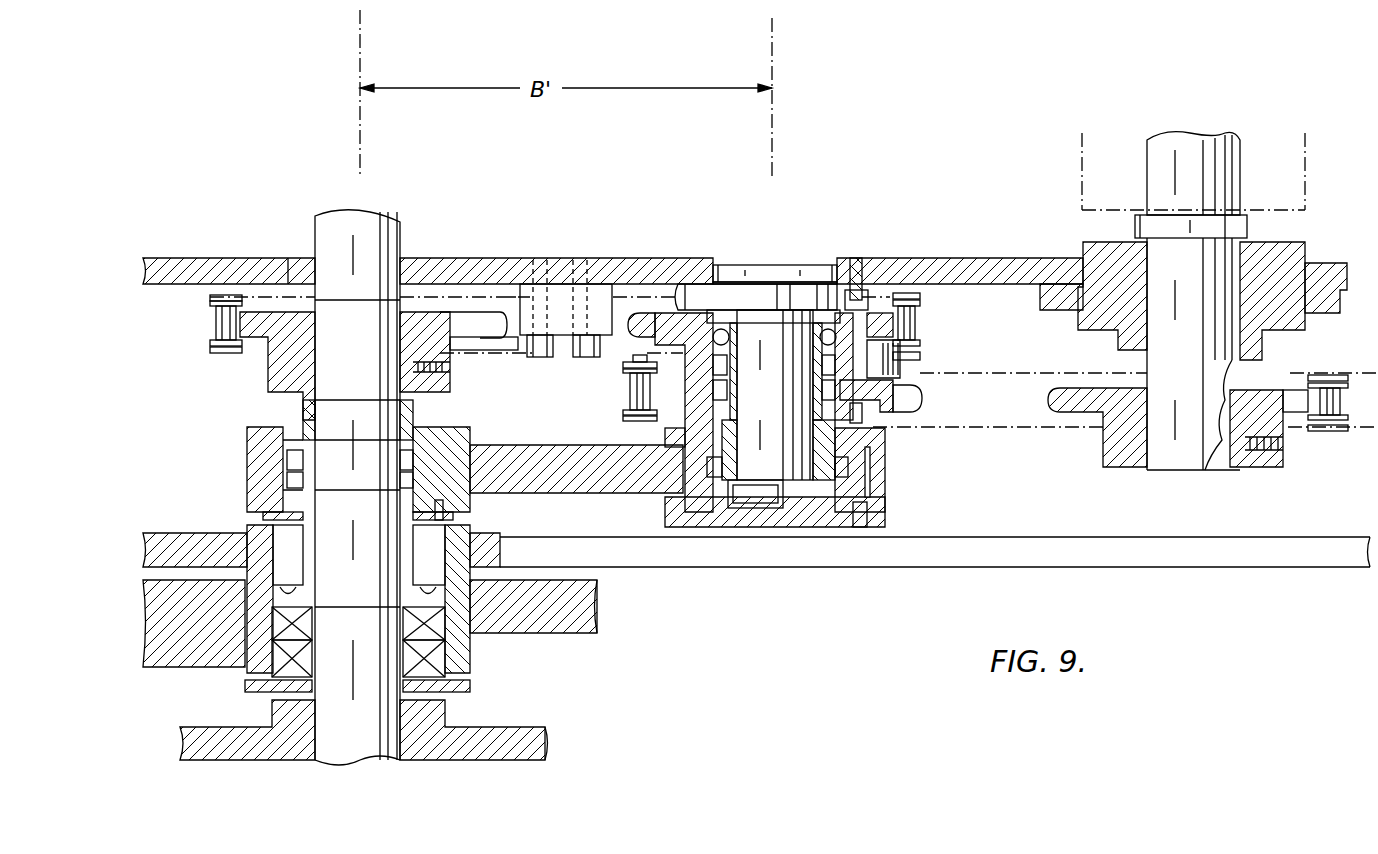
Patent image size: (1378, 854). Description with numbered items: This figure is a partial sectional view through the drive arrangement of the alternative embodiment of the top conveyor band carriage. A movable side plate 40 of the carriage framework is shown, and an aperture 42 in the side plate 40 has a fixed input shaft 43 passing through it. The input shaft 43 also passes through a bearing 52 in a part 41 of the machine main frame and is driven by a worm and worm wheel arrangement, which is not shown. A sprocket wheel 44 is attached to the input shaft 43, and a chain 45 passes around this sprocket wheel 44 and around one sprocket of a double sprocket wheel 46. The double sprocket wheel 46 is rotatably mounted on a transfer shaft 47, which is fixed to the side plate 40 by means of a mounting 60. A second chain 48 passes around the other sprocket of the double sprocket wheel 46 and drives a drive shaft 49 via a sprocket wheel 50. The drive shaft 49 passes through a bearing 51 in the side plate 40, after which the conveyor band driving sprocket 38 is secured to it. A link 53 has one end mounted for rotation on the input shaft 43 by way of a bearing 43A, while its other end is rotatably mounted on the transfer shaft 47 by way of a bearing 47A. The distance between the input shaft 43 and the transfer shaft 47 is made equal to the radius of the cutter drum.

The conveyor band driving sprocket 38 is at (1305, 185).
The side plate 40 is at (888, 260).
The part of the machine main frame 41 is at (852, 560).
The aperture 42 is at (425, 270).
The input shaft 43 is at (388, 232).
The bearing 43A is at (255, 478).
The sprocket wheel 44 is at (468, 332).
The chain 45 is at (226, 355).
The double sprocket wheel 46 is at (892, 374).
The transfer shaft 47 is at (777, 382).
The bearing 47A is at (880, 503).
The second chain 48 is at (1323, 392).
The drive shaft 49 is at (1163, 337).
The sprocket wheel 50 is at (1087, 405).
The bearing 51 is at (1322, 290).
The bearing 52 is at (463, 658).
The link 53 is at (600, 485).
The mounting 60 is at (742, 268).